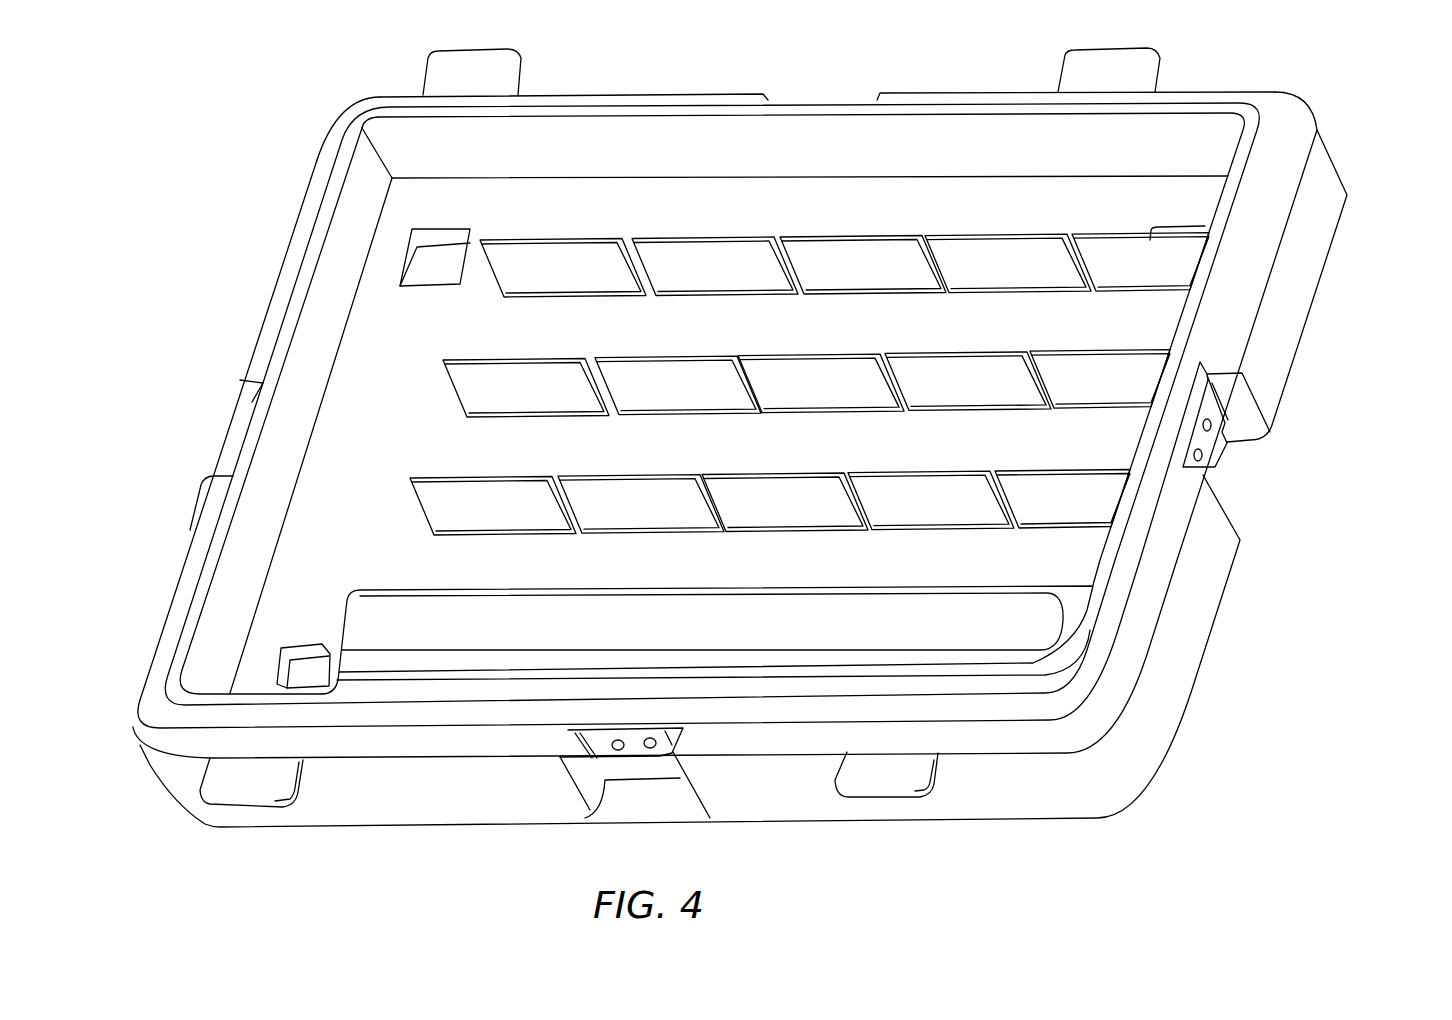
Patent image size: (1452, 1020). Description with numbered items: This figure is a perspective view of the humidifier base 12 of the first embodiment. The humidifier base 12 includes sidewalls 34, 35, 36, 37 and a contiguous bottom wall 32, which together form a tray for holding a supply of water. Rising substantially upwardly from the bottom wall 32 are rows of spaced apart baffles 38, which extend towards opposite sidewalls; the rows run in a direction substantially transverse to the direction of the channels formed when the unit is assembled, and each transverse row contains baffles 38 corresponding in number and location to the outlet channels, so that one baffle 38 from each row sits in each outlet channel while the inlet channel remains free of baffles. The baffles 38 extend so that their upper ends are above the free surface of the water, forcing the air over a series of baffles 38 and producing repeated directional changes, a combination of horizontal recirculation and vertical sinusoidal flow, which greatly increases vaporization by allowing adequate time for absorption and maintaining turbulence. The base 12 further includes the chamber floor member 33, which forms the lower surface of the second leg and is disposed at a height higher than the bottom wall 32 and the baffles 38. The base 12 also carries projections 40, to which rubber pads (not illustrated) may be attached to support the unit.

The humidifier base 12 is at (1346, 298).
The bottom wall 32 is at (293, 565).
The chamber floor member 33 is at (878, 617).
The sidewall 34 is at (797, 120).
The sidewall 35 is at (1228, 163).
The sidewall 36 is at (247, 687).
The sidewall 37 is at (287, 435).
The baffles 38 is at (566, 237).
The projections 40 is at (422, 288).